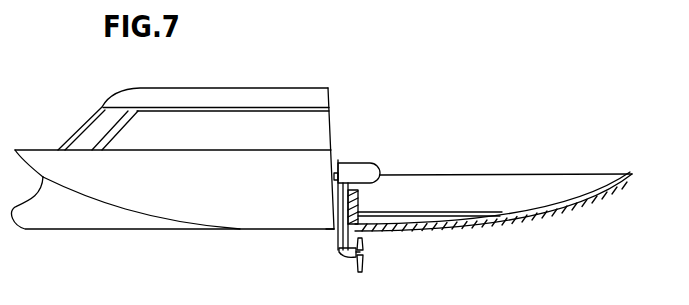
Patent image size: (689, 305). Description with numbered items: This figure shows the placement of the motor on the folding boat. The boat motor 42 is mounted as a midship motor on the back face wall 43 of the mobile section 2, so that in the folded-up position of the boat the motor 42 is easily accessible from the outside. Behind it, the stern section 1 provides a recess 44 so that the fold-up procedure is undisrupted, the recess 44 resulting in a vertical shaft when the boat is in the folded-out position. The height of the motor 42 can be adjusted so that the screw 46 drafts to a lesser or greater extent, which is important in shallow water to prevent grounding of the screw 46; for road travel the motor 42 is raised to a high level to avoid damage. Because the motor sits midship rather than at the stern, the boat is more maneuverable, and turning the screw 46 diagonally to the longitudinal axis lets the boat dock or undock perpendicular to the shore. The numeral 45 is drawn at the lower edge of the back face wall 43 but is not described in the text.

The stern section 1 is at (572, 207).
The mobile section 2 is at (258, 203).
The boat motor 42 is at (364, 170).
The back face wall 43 is at (331, 124).
The recess 44 is at (358, 214).
The hull bottom edge at transom 45 is at (335, 231).
The screw 46 is at (363, 252).